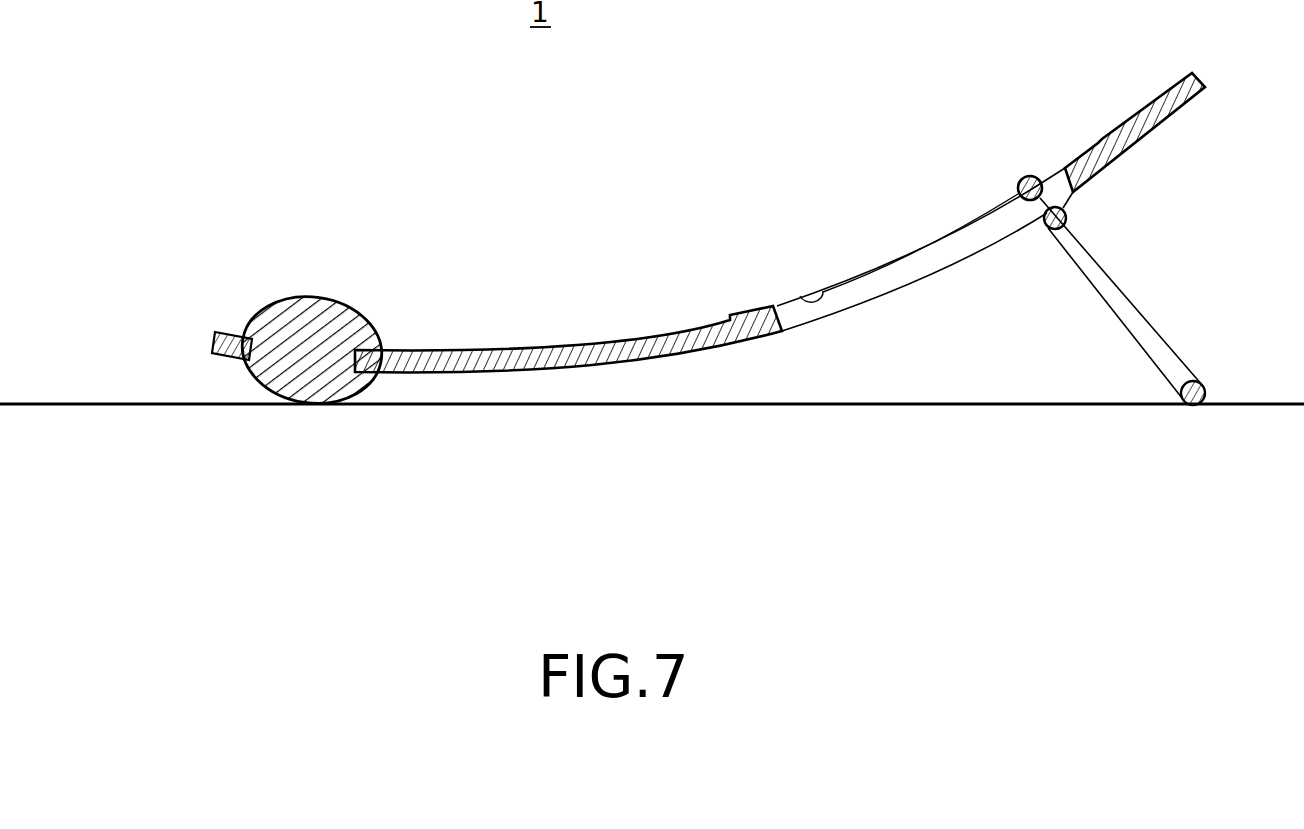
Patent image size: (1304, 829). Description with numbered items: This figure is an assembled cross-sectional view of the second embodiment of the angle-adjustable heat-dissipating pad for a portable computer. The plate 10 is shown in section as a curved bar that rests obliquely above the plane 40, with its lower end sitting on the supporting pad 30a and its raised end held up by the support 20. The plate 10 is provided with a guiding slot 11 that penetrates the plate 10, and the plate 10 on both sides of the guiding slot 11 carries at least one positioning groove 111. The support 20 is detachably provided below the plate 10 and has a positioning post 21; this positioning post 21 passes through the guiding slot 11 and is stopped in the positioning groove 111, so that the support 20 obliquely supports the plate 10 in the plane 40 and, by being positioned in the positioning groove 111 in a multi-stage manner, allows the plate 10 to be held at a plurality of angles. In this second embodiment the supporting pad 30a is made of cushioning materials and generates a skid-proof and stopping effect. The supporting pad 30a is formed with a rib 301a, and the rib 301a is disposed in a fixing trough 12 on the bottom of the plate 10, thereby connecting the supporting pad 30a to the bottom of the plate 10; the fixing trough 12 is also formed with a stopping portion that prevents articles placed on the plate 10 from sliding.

The plate 10 is at (558, 355).
The guiding slot 11 is at (858, 298).
The positioning groove 111 is at (923, 258).
The fixing trough 12 is at (240, 332).
The support 20 is at (1123, 308).
The positioning post 21 is at (1027, 177).
The supporting pad 30a is at (308, 320).
The rib 301a is at (282, 378).
The plane 40 is at (1032, 405).